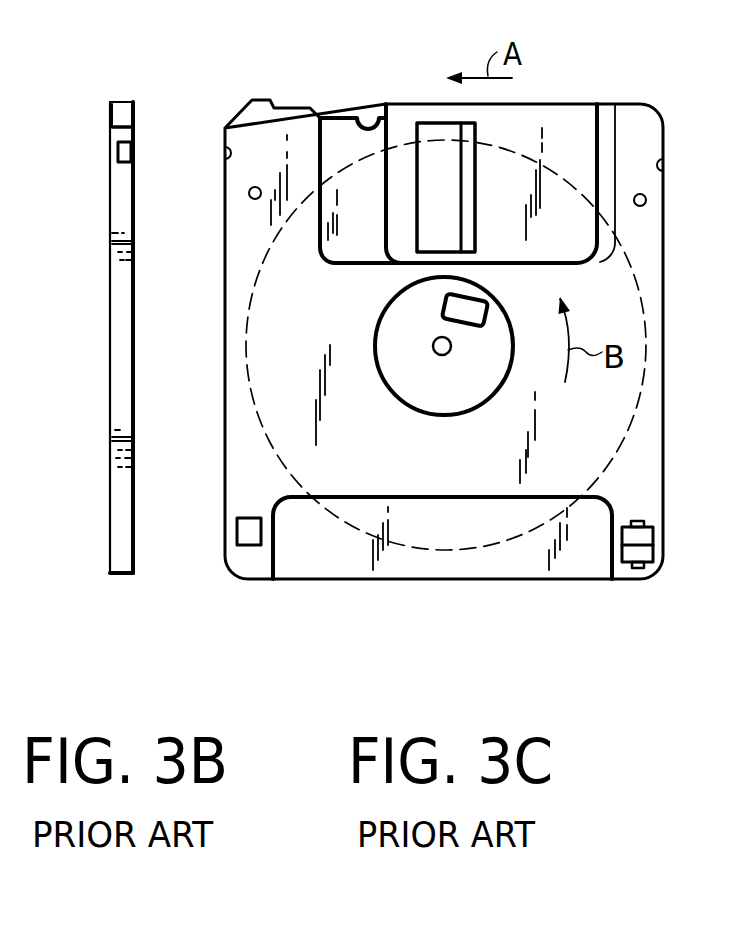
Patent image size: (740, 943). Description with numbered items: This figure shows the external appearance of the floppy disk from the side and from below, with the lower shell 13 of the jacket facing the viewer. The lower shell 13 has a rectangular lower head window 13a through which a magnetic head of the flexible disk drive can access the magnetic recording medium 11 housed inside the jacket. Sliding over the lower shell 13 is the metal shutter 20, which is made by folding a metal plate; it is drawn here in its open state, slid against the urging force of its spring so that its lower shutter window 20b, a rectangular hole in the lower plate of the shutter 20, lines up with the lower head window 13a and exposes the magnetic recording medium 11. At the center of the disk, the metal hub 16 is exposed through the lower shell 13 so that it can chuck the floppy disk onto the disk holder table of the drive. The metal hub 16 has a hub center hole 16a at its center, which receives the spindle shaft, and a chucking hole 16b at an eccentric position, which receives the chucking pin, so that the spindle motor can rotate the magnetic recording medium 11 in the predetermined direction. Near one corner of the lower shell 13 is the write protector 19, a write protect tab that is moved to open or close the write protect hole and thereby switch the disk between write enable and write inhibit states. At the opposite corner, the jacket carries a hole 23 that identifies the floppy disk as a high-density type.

In FIG. 3C, the magnetic recording medium 11 is at (655, 417).
In FIG. 3C, the lower shell 13 is at (663, 490).
In FIG. 3C, the lower head window 13a is at (442, 170).
In FIG. 3C, the metal hub 16 is at (405, 308).
In FIG. 3C, the hub center hole 16a is at (433, 350).
In FIG. 3C, the chucking hole 16b is at (470, 326).
In FIG. 3C, the write protector 19 is at (637, 568).
In FIG. 3C, the metal shutter 20 is at (557, 170).
In FIG. 3C, the lower shutter window 20b is at (478, 135).
In FIG. 3B, the hole 23 is at (66, 358).
In FIG. 3C, the hole 23 is at (245, 545).